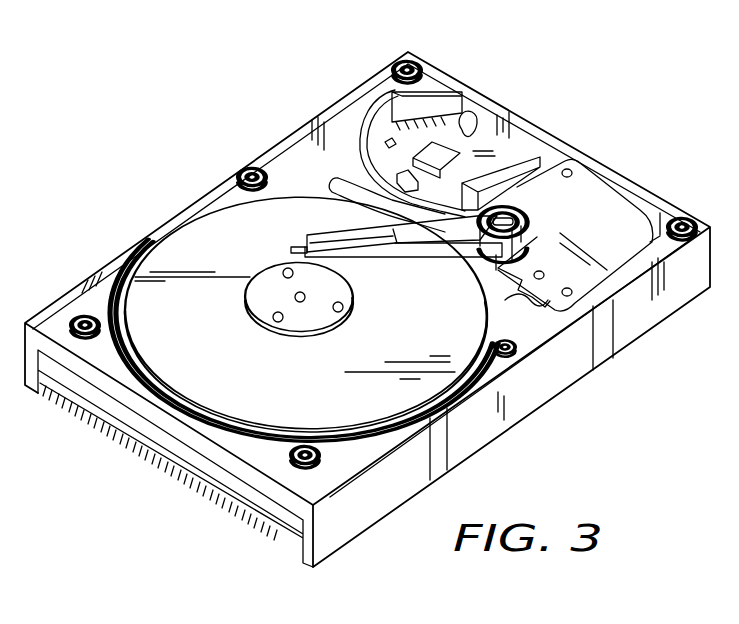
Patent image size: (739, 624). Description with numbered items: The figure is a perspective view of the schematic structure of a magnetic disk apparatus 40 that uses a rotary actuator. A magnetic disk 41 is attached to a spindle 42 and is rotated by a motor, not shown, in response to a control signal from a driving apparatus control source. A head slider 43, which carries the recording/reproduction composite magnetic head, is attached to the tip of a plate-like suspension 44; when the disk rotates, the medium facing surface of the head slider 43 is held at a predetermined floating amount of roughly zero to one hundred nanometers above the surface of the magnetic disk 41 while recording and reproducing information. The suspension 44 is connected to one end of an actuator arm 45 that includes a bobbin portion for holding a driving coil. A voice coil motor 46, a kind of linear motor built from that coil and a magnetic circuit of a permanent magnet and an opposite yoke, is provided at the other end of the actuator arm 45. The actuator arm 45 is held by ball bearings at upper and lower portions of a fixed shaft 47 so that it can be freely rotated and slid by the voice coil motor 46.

The magnetic disk apparatus 40 is at (580, 94).
The magnetic disk 41 is at (172, 260).
The spindle 42 is at (258, 306).
The head slider 43 is at (293, 247).
The suspension 44 is at (363, 258).
The actuator arm 45 is at (413, 258).
The voice coil motor 46 is at (613, 207).
The fixed shaft 47 is at (540, 215).